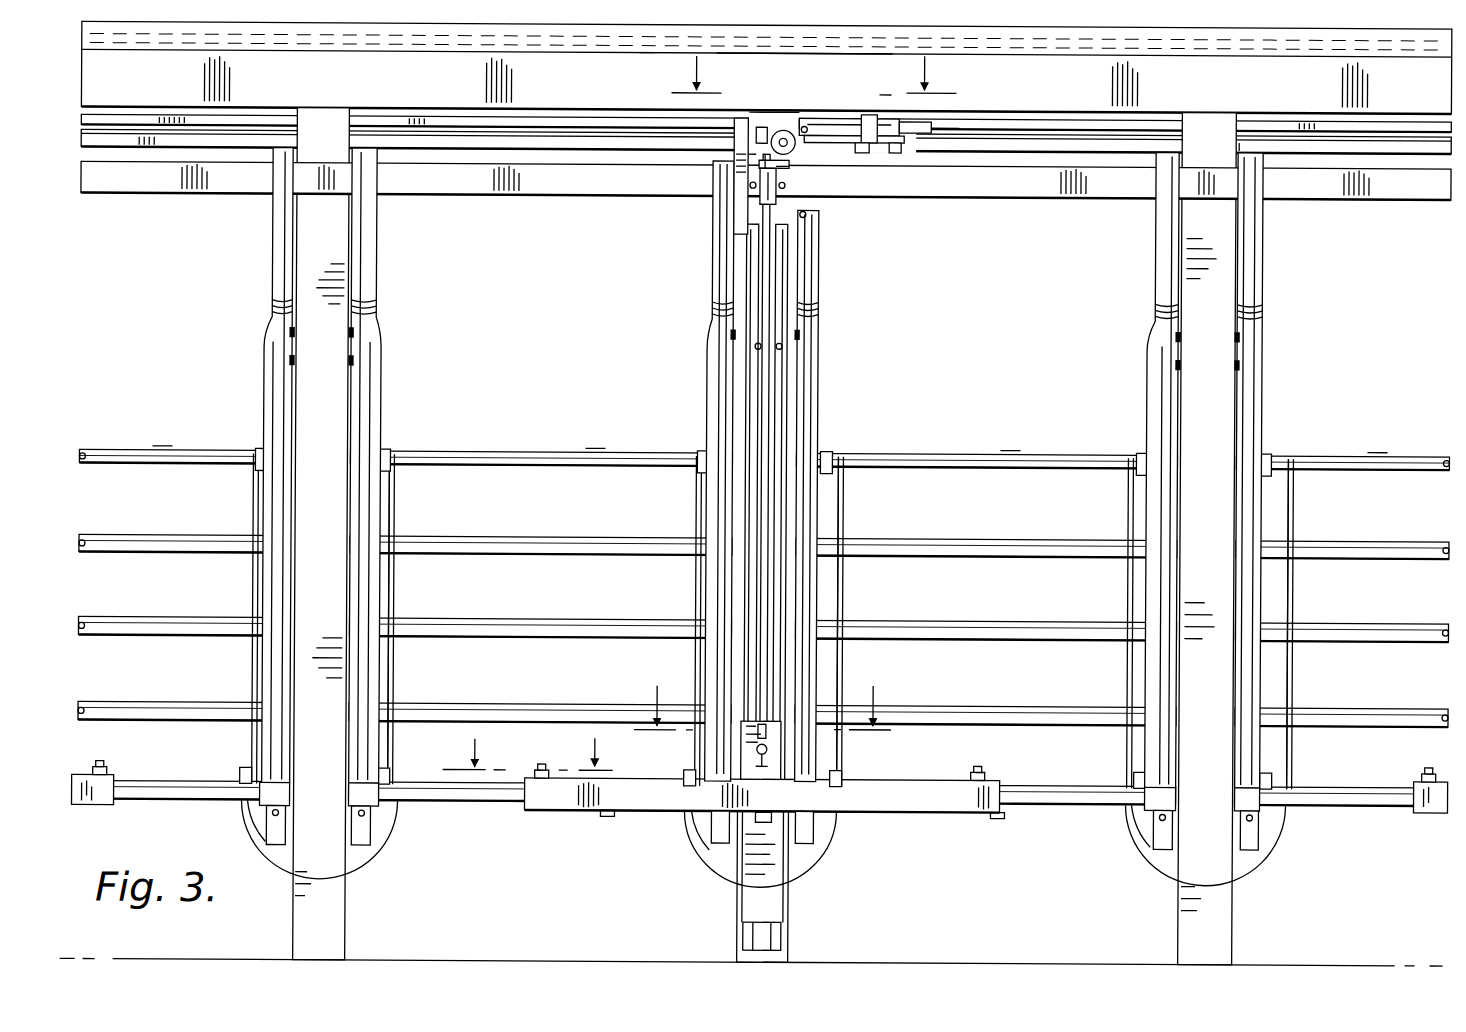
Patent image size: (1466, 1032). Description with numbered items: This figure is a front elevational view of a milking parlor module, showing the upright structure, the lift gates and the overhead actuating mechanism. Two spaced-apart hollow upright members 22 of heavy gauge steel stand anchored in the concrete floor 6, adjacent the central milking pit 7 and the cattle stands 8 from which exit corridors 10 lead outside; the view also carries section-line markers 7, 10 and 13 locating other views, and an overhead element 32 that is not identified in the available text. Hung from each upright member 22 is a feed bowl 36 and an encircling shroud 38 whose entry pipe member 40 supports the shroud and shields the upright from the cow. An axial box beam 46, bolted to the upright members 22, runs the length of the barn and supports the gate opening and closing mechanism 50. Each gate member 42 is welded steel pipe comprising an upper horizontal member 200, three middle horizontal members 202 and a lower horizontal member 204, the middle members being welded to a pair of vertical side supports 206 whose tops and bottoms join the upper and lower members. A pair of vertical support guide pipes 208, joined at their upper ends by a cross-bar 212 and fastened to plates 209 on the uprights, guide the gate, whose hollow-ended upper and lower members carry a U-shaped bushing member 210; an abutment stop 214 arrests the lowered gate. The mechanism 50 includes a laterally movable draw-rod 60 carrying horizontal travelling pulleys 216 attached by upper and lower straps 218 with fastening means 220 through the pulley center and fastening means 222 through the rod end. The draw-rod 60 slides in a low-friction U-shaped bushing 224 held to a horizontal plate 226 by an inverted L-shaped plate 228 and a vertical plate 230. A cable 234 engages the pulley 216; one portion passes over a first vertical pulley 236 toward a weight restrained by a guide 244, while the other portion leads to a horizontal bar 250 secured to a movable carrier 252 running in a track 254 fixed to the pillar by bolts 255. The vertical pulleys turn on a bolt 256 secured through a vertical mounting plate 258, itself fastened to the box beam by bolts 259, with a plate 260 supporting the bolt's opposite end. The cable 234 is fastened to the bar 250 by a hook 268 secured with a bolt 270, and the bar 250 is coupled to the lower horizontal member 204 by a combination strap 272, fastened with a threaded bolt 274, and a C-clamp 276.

The concrete floor 6 is at (540, 956).
The central milking pit 7 is at (797, 74).
The cattle stands 8 is at (121, 330).
The exit corridors 10 is at (762, 691).
The section line 13- 13 is at (527, 745).
The hollow upright members 22 is at (1240, 275).
The overhead beam 32 is at (121, 85).
The feed bowl 36 is at (283, 858).
The encircling shroud 38 is at (397, 480).
The entry pipe member 40 is at (268, 316).
The gate member 42 is at (158, 446).
The axial box beam 46 is at (183, 192).
The gate opening and closing mechanism 50 is at (780, 82).
The draw-rod 60 is at (576, 114).
The upper horizontal member 200 is at (190, 463).
The middle horizontal members 202 is at (165, 534).
The lower horizontal member 204 is at (205, 798).
The vertical side supports 206 is at (256, 570).
The vertical support guide pipes 208 is at (378, 236).
The plates 209 is at (274, 343).
The U-shaped bushing member 210 is at (260, 446).
The cross-bar 212 is at (246, 130).
The abutment stop 214 is at (271, 818).
The horizontal travelling pulleys 216 is at (868, 148).
The upper and lower straps 218 is at (884, 138).
The fastening means 220 is at (865, 110).
The fastening means 222 is at (935, 116).
The U-shaped bushing 224 is at (750, 140).
The horizontal plate 226 is at (787, 183).
The inverted L-shaped plate 228 is at (757, 128).
The vertical plate 230 is at (761, 182).
The cable 234 is at (764, 590).
The first vertical pulley 236 is at (803, 122).
The guide 244 is at (807, 212).
The horizontal bar 250 is at (105, 804).
The movable carrier 252 is at (775, 737).
The track 254 is at (789, 408).
The bolts 255 is at (785, 344).
The bolt 256 is at (796, 141).
The vertical mounting plate 258 is at (748, 152).
The bolts 259 is at (762, 195).
The plate 260 is at (790, 162).
The hook 268 is at (748, 757).
The bolt 270 is at (793, 858).
The combination strap 272 is at (590, 807).
The threaded bolt 274 is at (110, 764).
The C-clamp 276 is at (612, 807).